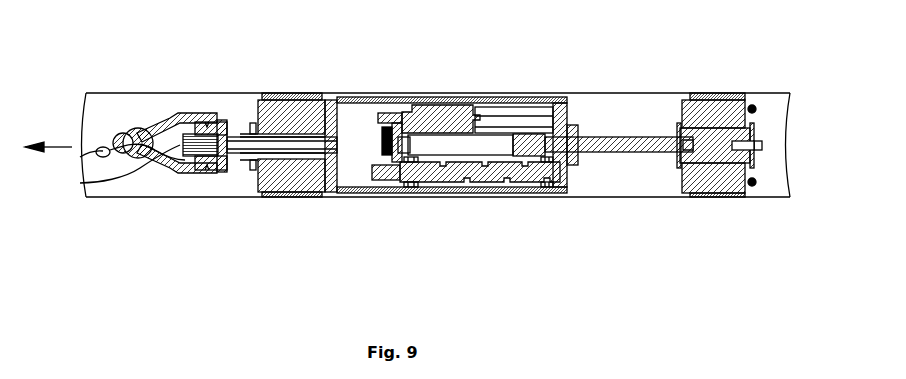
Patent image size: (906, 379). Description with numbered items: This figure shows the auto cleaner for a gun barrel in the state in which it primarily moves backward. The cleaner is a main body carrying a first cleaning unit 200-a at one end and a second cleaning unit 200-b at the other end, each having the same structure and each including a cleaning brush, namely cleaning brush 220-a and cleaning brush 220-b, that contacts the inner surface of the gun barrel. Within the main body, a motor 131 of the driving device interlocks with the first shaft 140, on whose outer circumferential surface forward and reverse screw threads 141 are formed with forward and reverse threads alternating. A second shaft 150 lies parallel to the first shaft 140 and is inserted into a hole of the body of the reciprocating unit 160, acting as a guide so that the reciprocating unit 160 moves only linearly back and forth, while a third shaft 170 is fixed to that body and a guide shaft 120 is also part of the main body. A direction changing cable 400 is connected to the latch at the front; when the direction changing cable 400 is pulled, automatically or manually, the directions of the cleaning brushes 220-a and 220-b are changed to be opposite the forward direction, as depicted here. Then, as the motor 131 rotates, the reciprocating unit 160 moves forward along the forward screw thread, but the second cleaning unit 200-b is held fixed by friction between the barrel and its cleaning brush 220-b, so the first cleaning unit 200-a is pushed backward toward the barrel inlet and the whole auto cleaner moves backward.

The direction changing cable 400 is at (102, 143).
The first cleaning unit 200-a is at (292, 93).
The cleaning brush of the first cleaning unit 220-a is at (297, 198).
The motor 131 is at (442, 106).
The guide shaft 120 is at (520, 120).
The third shaft 170 is at (623, 136).
The second cleaning unit 200-b is at (723, 93).
The cleaning brush of the second cleaning unit 220-b is at (720, 198).
The second shaft 150 is at (430, 153).
The first shaft 140 is at (467, 184).
The forward and reverse screw threads 141 is at (514, 187).
The reciprocating unit 160 is at (548, 187).